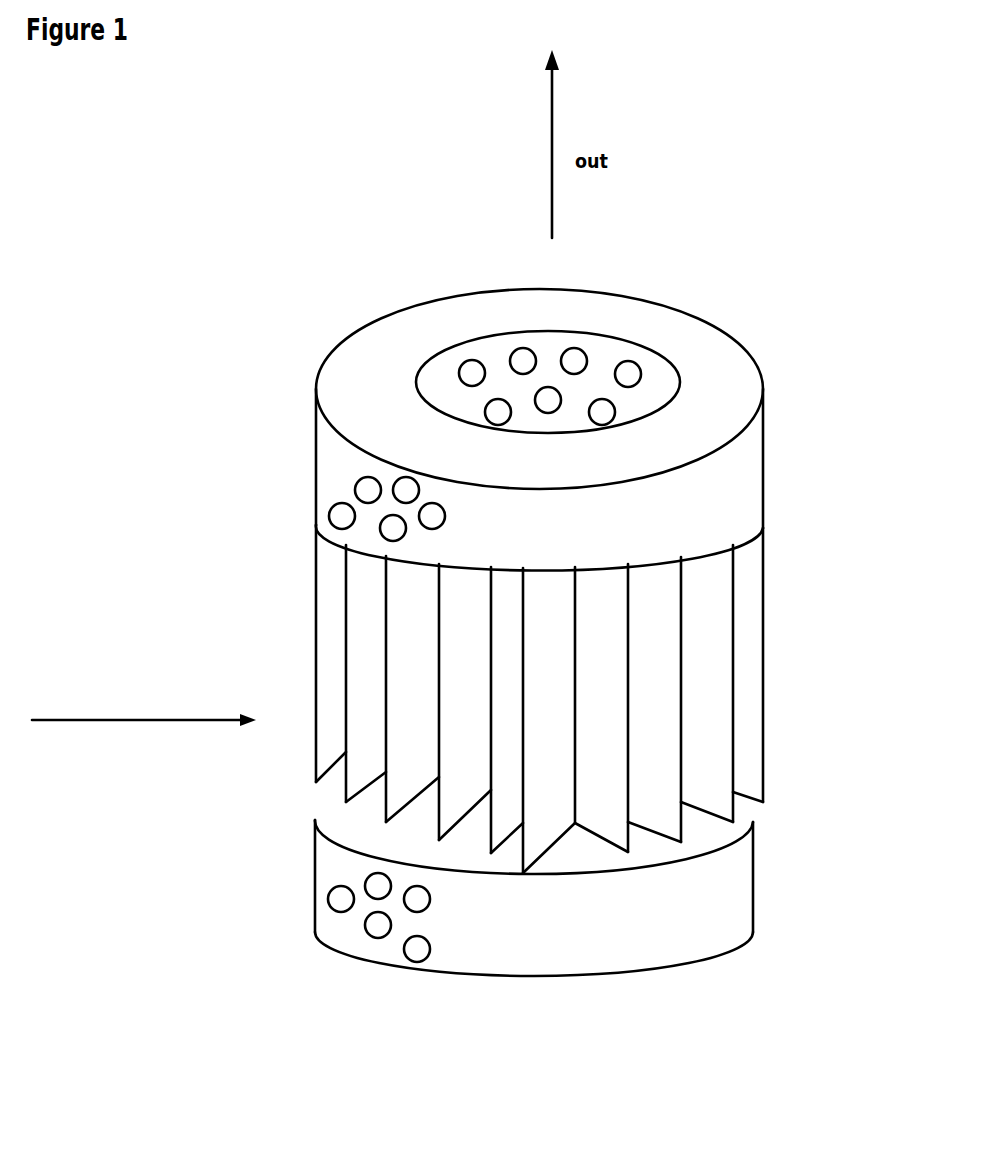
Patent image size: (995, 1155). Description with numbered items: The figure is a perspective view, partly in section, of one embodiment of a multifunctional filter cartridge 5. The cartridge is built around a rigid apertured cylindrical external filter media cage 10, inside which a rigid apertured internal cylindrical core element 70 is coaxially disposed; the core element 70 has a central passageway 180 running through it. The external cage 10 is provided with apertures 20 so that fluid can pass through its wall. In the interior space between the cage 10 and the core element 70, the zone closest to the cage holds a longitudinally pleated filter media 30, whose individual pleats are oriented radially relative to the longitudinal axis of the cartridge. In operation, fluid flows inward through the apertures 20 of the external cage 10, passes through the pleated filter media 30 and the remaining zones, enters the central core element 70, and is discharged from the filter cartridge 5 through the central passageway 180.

The filter cartridge 5 is at (760, 477).
The external filter media cage 10 is at (343, 337).
The apertures 20 is at (340, 515).
The longitudinally pleated filter media 30 is at (760, 670).
The internal cylindrical core element 70 is at (645, 398).
The central passageway 180 is at (604, 335).